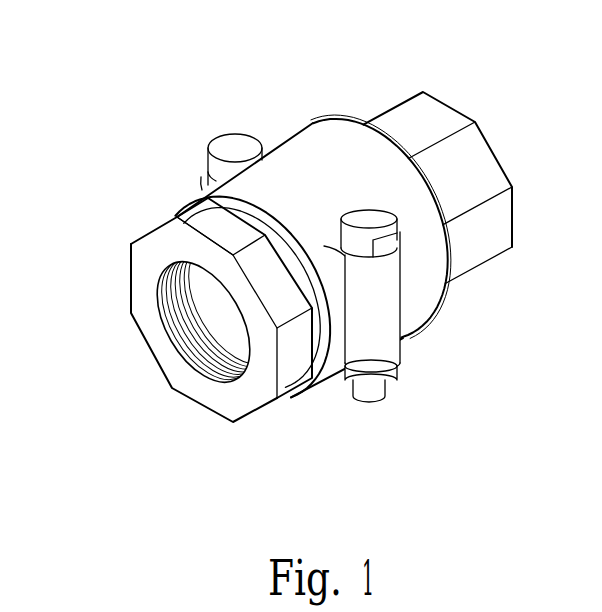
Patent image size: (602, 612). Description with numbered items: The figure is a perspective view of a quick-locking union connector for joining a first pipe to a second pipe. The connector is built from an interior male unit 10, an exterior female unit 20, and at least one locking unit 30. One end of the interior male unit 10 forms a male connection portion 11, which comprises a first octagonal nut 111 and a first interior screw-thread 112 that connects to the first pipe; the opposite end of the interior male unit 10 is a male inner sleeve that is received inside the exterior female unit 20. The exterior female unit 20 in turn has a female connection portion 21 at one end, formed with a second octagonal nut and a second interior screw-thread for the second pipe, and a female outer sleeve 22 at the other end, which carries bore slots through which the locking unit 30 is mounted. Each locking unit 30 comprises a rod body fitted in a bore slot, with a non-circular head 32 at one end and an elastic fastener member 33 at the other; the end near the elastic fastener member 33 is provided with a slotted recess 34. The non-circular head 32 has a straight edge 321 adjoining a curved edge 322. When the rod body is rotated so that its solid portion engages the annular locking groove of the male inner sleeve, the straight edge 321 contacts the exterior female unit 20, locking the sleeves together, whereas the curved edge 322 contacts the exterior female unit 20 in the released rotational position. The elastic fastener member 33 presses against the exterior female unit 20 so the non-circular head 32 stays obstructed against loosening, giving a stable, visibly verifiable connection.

The interior male unit 10 is at (152, 224).
The male connection portion 11 is at (143, 268).
The first octagonal nut 111 is at (143, 338).
The first interior screw-thread 112 is at (213, 365).
The exterior female unit 20 is at (301, 122).
The female connection portion 21 is at (408, 110).
The female outer sleeve 22 is at (290, 156).
The locking unit 30 is at (215, 140).
The non-circular head 32 is at (378, 225).
The straight edge 321 is at (383, 247).
The curved edge 322 is at (352, 208).
The elastic fastener member 33 is at (407, 372).
The slotted recess 34 is at (380, 397).